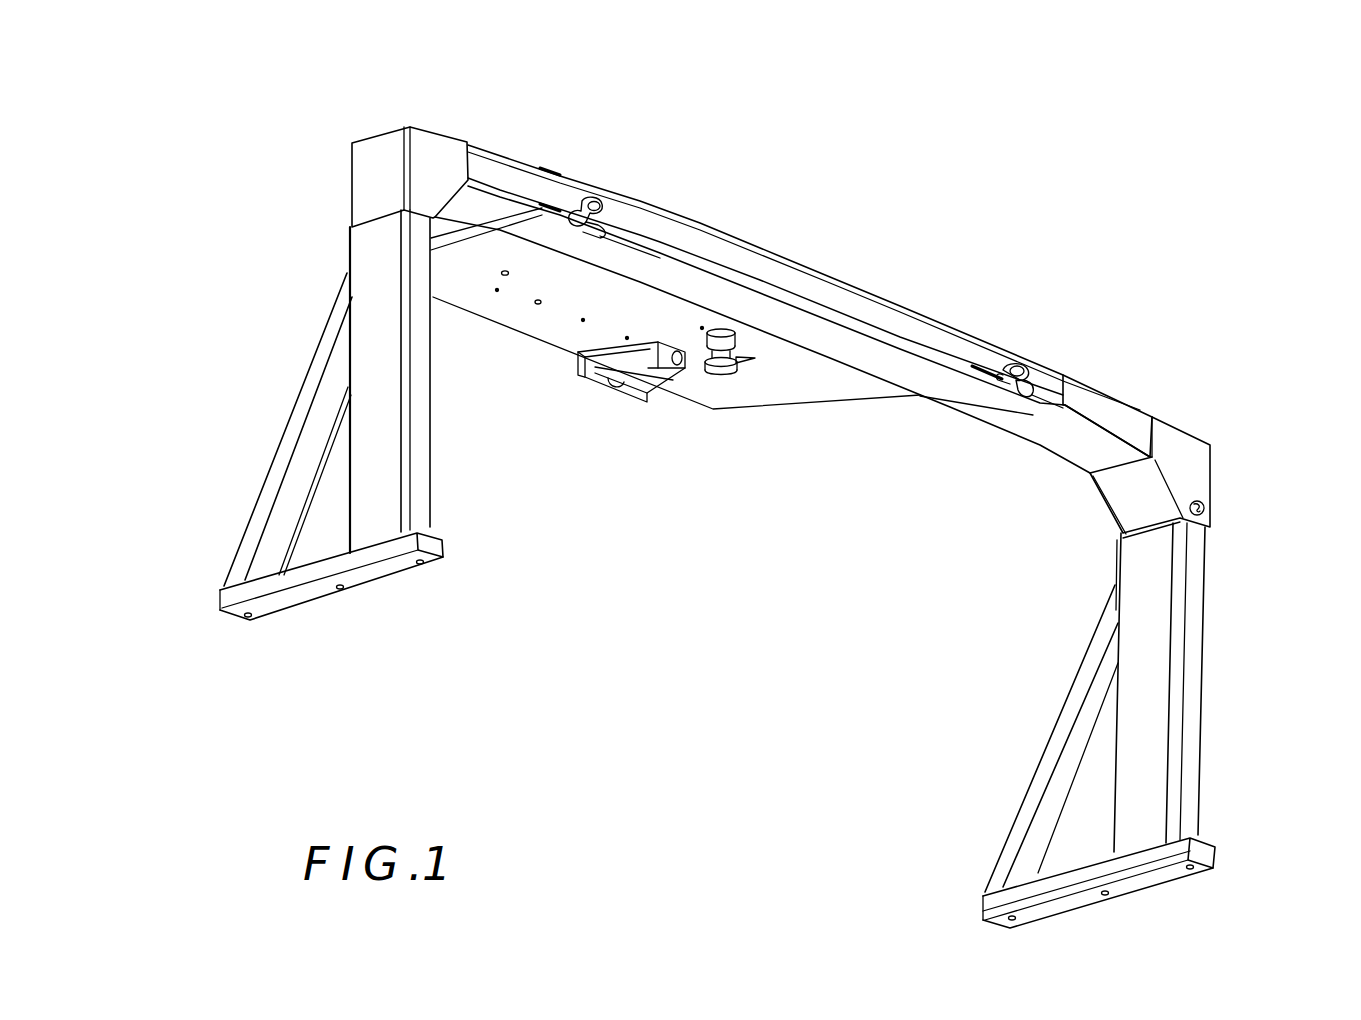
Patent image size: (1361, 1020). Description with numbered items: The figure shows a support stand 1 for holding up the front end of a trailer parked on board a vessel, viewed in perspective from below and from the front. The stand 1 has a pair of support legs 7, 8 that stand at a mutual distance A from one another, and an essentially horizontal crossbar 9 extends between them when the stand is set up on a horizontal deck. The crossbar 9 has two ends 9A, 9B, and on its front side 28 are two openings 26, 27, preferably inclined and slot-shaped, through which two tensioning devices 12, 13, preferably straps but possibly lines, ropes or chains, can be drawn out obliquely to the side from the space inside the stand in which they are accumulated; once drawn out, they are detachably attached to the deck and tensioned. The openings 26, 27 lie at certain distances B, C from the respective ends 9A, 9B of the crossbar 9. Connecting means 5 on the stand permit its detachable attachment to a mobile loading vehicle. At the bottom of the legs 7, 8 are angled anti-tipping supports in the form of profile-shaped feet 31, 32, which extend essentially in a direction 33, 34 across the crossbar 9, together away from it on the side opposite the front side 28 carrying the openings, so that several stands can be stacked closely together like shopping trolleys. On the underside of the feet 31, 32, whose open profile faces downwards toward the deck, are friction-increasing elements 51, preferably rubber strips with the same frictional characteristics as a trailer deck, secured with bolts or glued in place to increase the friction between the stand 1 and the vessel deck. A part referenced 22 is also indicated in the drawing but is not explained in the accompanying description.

The support stand 1 is at (792, 302).
The connecting means 5 is at (735, 392).
The support leg 7 is at (372, 255).
The support leg 8 is at (1190, 653).
The crossbar 9 is at (853, 300).
The end of the crossbar 9A is at (490, 163).
The end of the crossbar 9B is at (1137, 422).
The tensioning device 12 is at (590, 196).
The tensioning device 13 is at (1017, 358).
The cable 22 is at (600, 236).
The opening 26 is at (600, 205).
The opening 27 is at (1025, 352).
The front side of the crossbar 28 is at (753, 258).
The foot 31 is at (292, 577).
The foot 32 is at (1167, 850).
The direction 33 is at (205, 652).
The direction 34 is at (500, 590).
The friction-increasing elements 51 is at (397, 568).
The mutual distance A is at (1140, 757).
The distance B is at (592, 240).
The distance C is at (1017, 358).